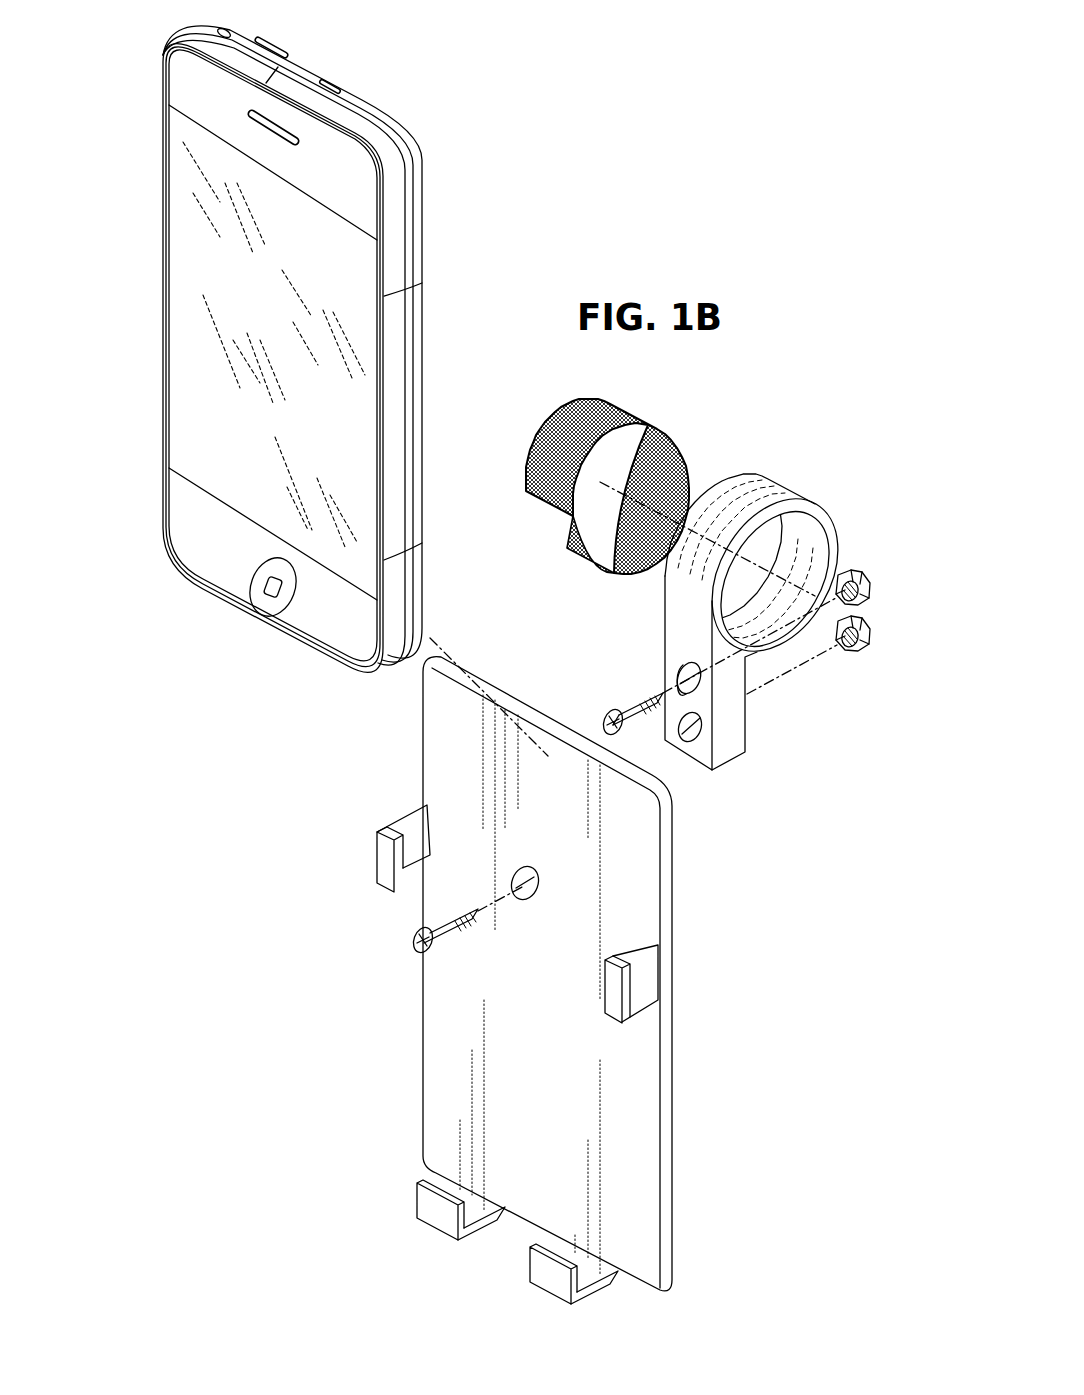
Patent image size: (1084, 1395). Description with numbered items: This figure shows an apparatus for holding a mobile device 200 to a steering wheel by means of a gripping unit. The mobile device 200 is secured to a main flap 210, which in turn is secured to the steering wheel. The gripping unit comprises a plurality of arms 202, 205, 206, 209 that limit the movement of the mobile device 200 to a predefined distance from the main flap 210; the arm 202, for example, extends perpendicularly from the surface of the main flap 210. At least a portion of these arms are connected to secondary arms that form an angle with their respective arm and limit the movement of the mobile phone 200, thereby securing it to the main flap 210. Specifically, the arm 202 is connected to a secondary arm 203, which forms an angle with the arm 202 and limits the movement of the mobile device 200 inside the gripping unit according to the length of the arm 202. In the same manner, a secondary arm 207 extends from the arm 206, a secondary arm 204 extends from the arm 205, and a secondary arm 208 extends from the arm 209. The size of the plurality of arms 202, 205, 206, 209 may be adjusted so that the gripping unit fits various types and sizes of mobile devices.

The mobile device 200 is at (238, 588).
The main flap 210 is at (647, 888).
The arm 202 is at (645, 985).
The secondary arm 203 is at (610, 995).
The secondary arm 204 is at (388, 867).
The arm 205 is at (408, 815).
The arm 206 is at (588, 1285).
The secondary arm 207 is at (543, 1268).
The secondary arm 208 is at (440, 1208).
The arm 209 is at (487, 1232).